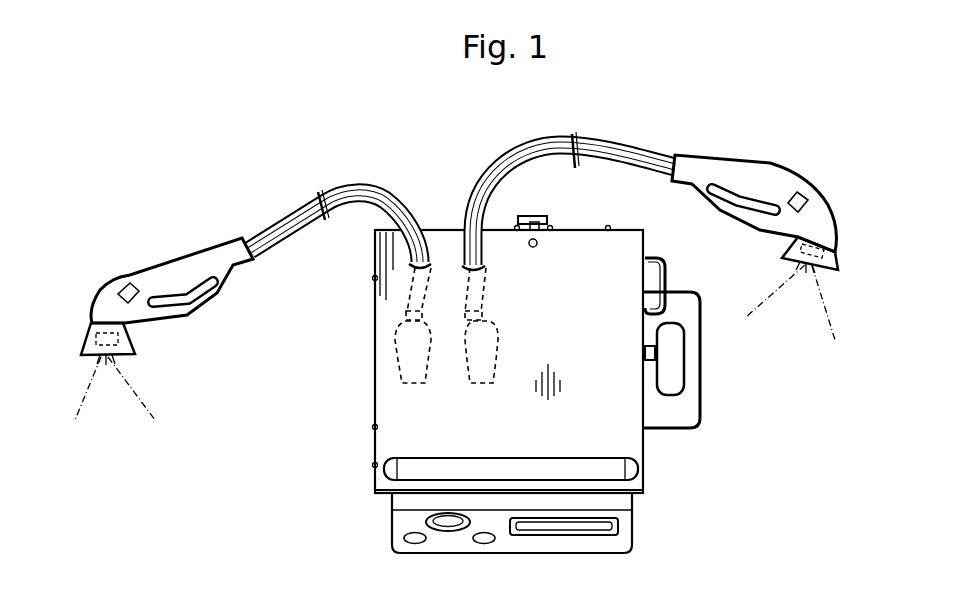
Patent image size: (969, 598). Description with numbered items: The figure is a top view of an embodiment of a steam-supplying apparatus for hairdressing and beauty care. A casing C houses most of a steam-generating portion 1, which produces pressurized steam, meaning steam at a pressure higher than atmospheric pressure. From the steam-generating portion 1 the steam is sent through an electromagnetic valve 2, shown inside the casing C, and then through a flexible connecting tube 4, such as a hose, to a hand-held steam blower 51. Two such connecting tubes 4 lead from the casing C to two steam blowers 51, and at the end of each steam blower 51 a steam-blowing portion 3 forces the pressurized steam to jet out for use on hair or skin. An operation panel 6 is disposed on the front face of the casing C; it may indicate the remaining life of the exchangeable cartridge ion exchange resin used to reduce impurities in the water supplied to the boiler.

The steam-generating portion 1 is at (703, 367).
The electromagnetic valve 2 is at (494, 355).
The steam-blowing portion 3 is at (92, 360).
The flexible connecting tube 4 is at (288, 213).
The operation panel 6 is at (606, 527).
The steam blower 51 is at (110, 297).
The casing C is at (396, 410).